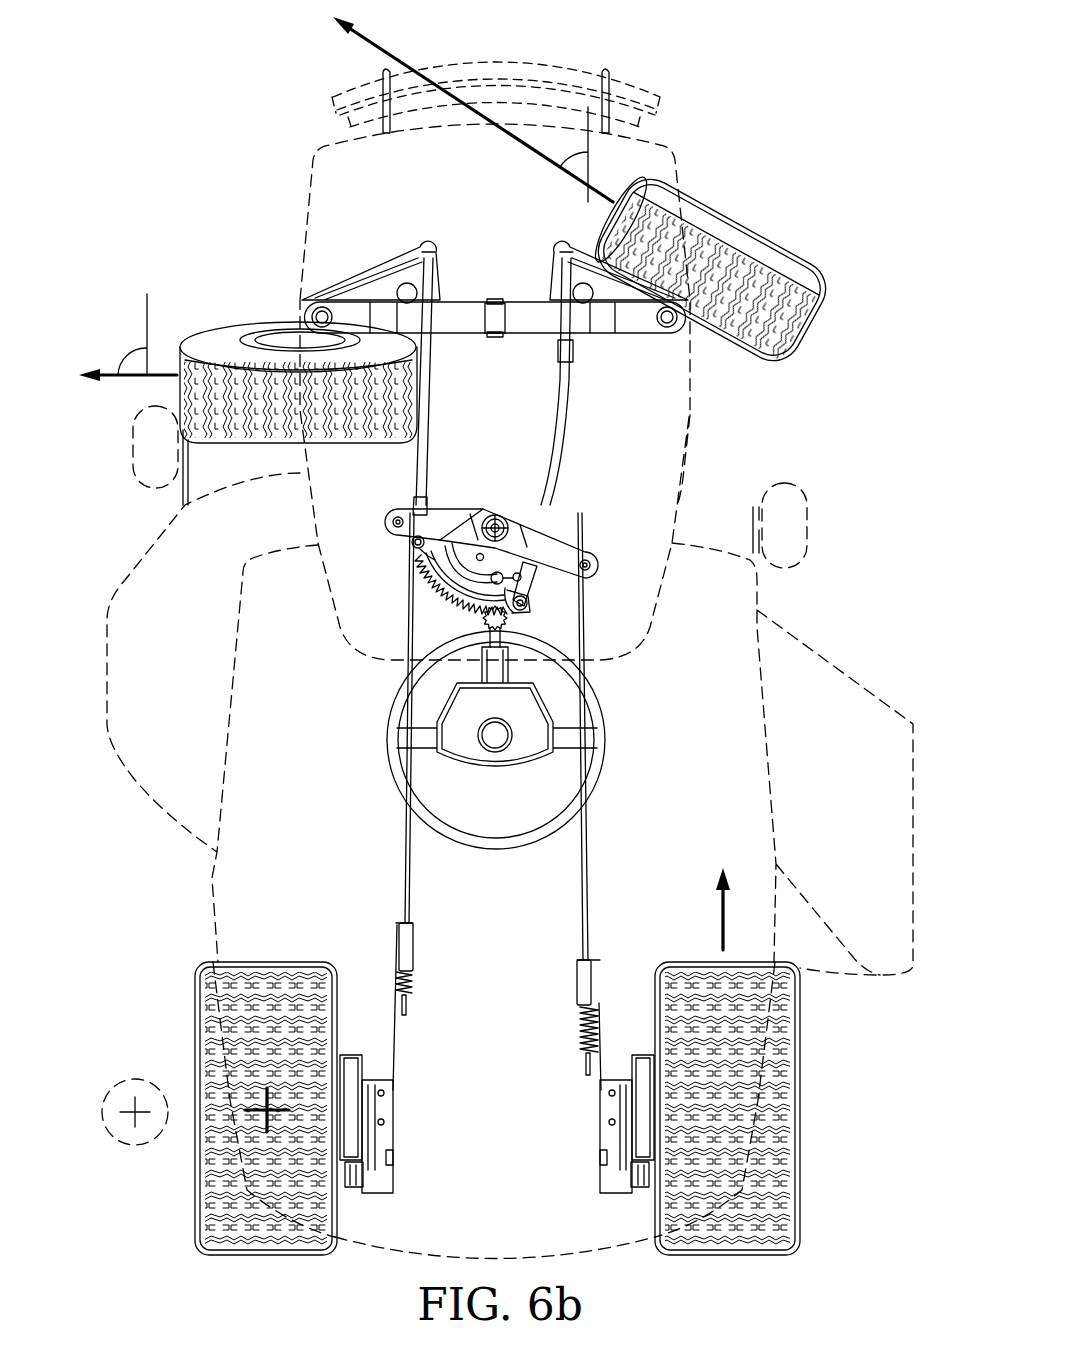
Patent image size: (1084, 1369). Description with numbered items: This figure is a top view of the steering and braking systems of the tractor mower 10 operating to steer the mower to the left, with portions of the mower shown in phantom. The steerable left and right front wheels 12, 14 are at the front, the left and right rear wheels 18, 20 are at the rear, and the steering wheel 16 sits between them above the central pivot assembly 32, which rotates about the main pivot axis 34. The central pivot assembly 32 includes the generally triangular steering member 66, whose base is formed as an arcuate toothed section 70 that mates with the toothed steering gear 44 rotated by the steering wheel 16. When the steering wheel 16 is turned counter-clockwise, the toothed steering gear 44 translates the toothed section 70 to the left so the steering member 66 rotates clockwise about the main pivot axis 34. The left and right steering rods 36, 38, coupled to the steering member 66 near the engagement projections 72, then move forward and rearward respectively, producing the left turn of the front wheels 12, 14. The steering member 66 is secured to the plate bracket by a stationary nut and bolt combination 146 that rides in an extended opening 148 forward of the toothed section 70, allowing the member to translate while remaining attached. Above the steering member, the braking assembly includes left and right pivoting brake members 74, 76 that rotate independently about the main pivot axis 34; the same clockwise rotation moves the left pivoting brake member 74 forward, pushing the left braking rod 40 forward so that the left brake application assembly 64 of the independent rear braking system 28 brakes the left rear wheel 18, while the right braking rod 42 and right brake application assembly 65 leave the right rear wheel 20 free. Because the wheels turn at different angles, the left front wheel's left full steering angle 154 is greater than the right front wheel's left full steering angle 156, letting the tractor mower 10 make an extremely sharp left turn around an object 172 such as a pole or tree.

The tractor mower 10 is at (846, 102).
The left front wheel 12 is at (232, 322).
The right front wheel 14 is at (770, 237).
The steering wheel 16 is at (602, 738).
The left rear wheel 18 is at (205, 1038).
The right rear wheel 20 is at (790, 1040).
The independent rear braking system 28 is at (520, 1195).
The central pivot assembly 32 is at (494, 470).
The main pivot axis 34 is at (498, 518).
The left steering rod 36 is at (415, 456).
The right steering rod 38 is at (560, 468).
The left braking rod 40 is at (408, 882).
The right braking rod 42 is at (584, 910).
The toothed steering gear 44 is at (470, 620).
The left brake application assembly 64 is at (382, 1212).
The right brake application assembly 65 is at (608, 1215).
The steering member 66 is at (525, 588).
The toothed section 70 is at (427, 582).
The engagement projections 72 is at (413, 544).
The left pivoting brake member 74 is at (415, 523).
The right pivoting brake member 76 is at (560, 553).
The stationary nut and bolt combination 146 is at (527, 575).
The extended opening 148 is at (450, 553).
The left full steering angle of left front wheel 154 is at (120, 348).
The left full steering angle of right front wheel 156 is at (580, 165).
The object 172 is at (118, 1082).